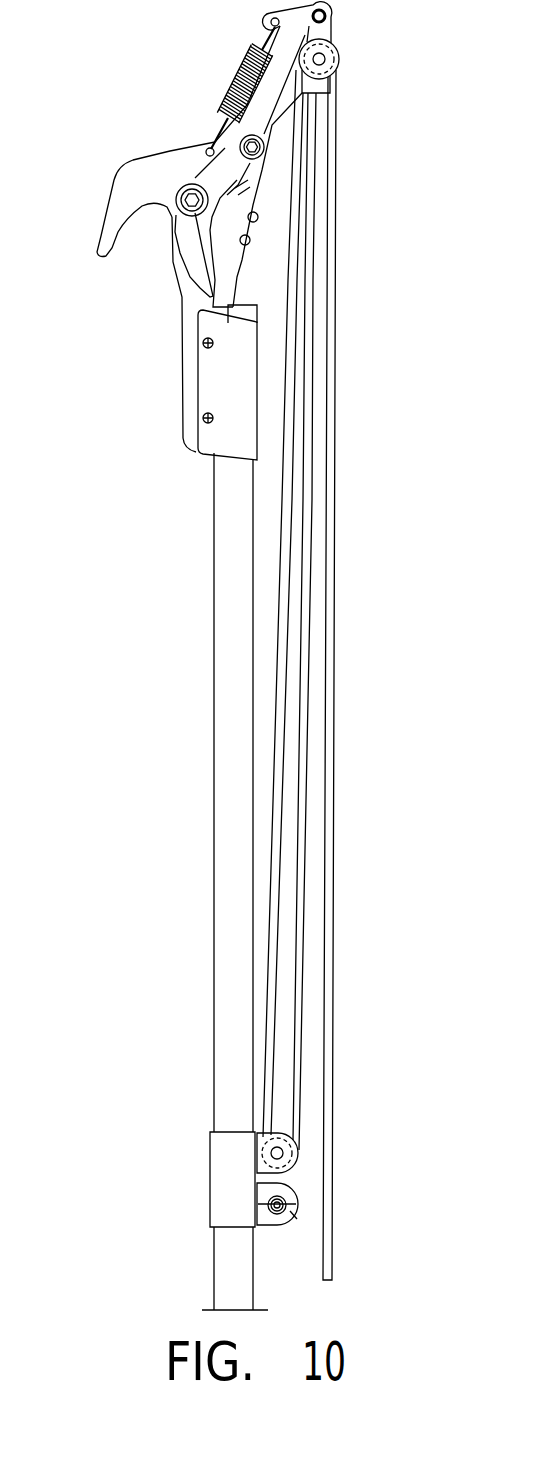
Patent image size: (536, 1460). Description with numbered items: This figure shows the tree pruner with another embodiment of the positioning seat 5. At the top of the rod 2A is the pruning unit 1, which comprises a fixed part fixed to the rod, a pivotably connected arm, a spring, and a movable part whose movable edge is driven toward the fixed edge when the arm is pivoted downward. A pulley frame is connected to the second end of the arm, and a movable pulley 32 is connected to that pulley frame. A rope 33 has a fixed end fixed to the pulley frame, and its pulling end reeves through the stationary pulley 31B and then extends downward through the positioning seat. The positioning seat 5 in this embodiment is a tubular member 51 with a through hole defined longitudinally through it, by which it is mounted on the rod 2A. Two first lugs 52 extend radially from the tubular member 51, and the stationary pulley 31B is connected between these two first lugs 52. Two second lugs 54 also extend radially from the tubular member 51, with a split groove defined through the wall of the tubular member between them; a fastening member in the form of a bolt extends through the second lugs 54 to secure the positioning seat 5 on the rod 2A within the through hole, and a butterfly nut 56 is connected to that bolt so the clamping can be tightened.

The pruning unit 1 is at (136, 142).
The movable pulley 32 is at (343, 52).
The rope 33 is at (330, 1058).
The rod 2A is at (233, 1072).
The stationary pulley 31B is at (298, 1143).
The positioning seat 5 is at (237, 1232).
The tubular member 51 is at (218, 1215).
The first lugs 52 is at (297, 1167).
The second lugs 54 is at (265, 1220).
The butterfly nut 56 is at (297, 1215).